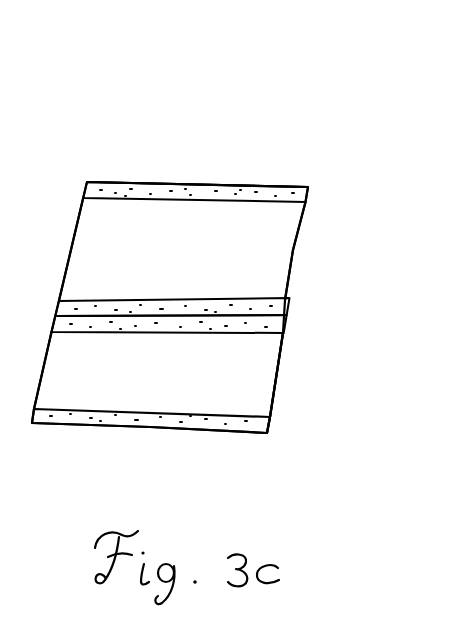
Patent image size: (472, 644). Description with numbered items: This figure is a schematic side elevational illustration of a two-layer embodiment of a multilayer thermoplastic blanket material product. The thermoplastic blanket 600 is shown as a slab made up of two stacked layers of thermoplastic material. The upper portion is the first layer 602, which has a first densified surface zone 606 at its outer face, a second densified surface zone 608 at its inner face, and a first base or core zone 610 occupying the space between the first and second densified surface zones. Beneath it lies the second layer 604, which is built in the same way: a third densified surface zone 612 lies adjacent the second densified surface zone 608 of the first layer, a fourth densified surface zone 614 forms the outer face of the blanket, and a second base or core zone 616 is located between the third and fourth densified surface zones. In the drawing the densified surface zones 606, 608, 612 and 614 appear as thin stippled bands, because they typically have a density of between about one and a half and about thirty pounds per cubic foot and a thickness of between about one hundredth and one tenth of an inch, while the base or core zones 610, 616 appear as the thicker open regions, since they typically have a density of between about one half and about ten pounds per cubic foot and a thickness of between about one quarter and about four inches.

The thermoplastic blanket 600 is at (340, 118).
The first layer 602 is at (330, 233).
The second layer 604 is at (313, 385).
The first densified surface zone 606 is at (205, 186).
The second densified surface zone 608 is at (280, 312).
The first base or core zone 610 is at (270, 262).
The third densified surface zone 612 is at (280, 331).
The fourth densified surface zone 614 is at (153, 427).
The second base or core zone 616 is at (268, 370).